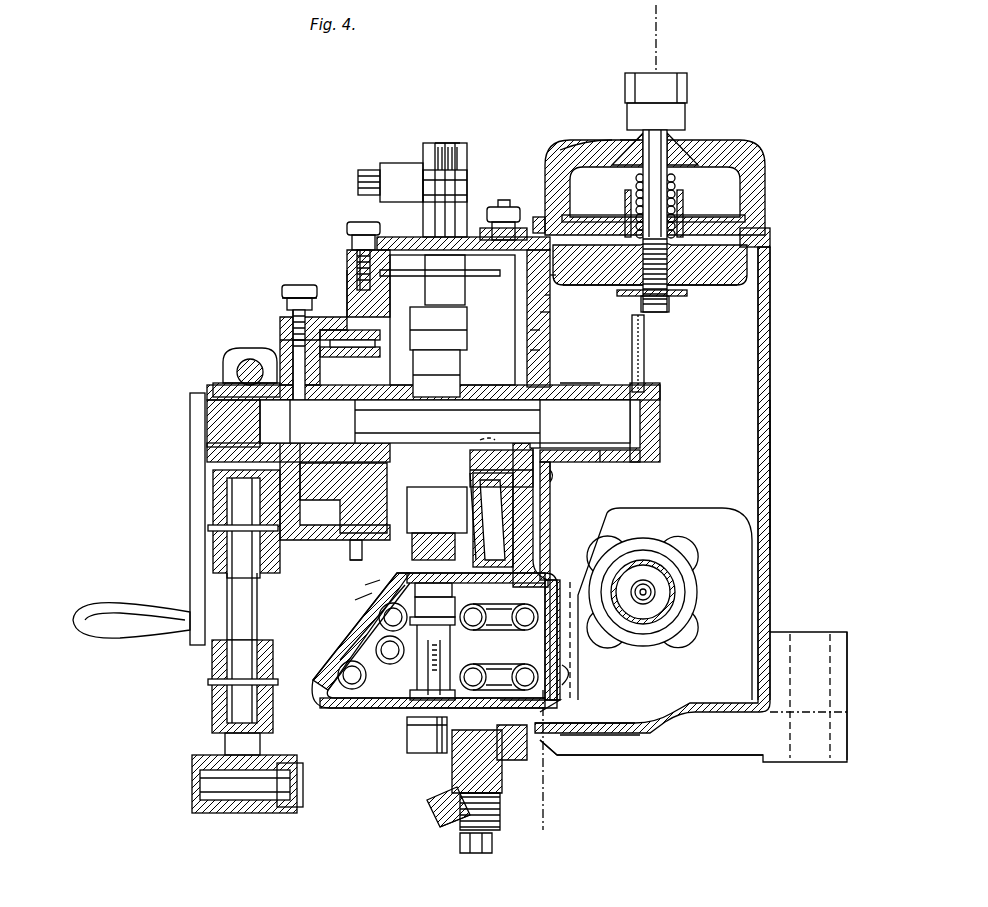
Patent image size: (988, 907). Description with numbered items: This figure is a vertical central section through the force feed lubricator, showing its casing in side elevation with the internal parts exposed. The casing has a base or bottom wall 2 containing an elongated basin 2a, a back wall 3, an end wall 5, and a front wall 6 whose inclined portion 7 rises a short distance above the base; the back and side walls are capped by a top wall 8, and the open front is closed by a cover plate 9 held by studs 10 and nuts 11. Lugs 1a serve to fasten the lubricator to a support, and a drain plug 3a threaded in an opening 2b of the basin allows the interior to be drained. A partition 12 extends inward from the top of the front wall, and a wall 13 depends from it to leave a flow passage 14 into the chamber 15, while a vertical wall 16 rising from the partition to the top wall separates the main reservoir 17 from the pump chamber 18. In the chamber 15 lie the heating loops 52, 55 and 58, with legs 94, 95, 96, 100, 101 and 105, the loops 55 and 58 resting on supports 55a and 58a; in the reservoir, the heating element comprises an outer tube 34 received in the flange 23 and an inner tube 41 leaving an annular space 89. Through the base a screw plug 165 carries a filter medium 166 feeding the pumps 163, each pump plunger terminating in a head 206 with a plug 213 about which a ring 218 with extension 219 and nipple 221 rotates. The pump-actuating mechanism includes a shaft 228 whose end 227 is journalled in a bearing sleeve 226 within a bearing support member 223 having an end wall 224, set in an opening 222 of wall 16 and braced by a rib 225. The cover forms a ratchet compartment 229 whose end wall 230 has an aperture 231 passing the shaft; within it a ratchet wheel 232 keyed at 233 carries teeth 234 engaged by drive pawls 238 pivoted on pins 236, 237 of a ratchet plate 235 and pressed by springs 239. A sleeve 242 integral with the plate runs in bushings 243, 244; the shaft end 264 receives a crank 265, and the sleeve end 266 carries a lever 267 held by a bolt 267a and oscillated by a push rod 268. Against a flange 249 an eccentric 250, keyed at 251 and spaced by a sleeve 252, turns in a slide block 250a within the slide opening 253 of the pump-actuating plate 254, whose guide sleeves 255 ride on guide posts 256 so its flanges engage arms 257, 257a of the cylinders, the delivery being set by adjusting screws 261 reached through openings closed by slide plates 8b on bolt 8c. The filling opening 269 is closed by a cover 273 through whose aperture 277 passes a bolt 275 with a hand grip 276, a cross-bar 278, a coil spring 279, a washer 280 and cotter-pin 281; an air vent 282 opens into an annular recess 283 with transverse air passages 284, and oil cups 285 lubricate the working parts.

The lugs 1a is at (557, 755).
The base or bottom wall 2 is at (705, 708).
The basin 2a is at (655, 728).
The opening 2b is at (460, 790).
The back wall 3 is at (772, 455).
The drain plug 3a is at (430, 805).
The side or end wall 5 is at (670, 15).
The front wall 6 is at (330, 700).
The inclined portion 7 is at (350, 640).
The top wall 8 is at (365, 232).
The slide plates 8b is at (490, 215).
The bolt 8c is at (504, 200).
The cover plate 9 is at (365, 588).
The studs 10 is at (350, 550).
The nuts 11 is at (352, 563).
The partition 12 is at (280, 325).
The wall 13 is at (562, 660).
The flow passage 14 is at (570, 712).
The space or chamber 15 is at (410, 708).
The vertical wall 16 is at (513, 522).
The main reservoir or storage chamber 17 is at (772, 335).
The pump chamber 18 is at (345, 300).
The flange or boss 23 is at (690, 580).
The outer tube 34 is at (675, 592).
The tube 41 is at (646, 603).
The heating tube 52 is at (497, 628).
The heating tube or loop 55 is at (498, 672).
The support 55a is at (560, 705).
The heating tube or loop 58 is at (376, 652).
The support 58a is at (338, 678).
The annular space 89 is at (655, 596).
The leg 94 is at (523, 606).
The leg 95 is at (476, 606).
The leg 96 is at (358, 603).
The leg 100 is at (395, 700).
The leg 101 is at (470, 666).
The leg 105 is at (572, 683).
The pumps 163 is at (436, 369).
The screw plug 165 is at (407, 738).
The filter medium 166 is at (415, 660).
The head 206 is at (425, 212).
The plug 213 is at (450, 150).
The ring 218 is at (423, 172).
The extension 219 is at (412, 175).
The hollow nipple 221 is at (370, 170).
The opening 222 is at (553, 470).
The bearing support member 223 is at (662, 458).
The end wall 224 is at (662, 440).
The reinforcing rib or plate 225 is at (700, 510).
The bearing sleeve 226 is at (612, 462).
The end of shaft 227 is at (590, 383).
The shaft 228 is at (447, 423).
The ratchet compartment or chamber 229 is at (330, 350).
The end wall 230 is at (290, 330).
The aperture 231 is at (230, 470).
The ratchet wheel 232 is at (470, 470).
The key 233 is at (395, 440).
The teeth 234 is at (436, 371).
The ratchet plate 235 is at (320, 527).
The pin 236 is at (385, 345).
The pin 237 is at (390, 508).
The drive pawl 238 is at (385, 333).
The spring member 239 is at (325, 330).
The sleeve 242 is at (285, 320).
The bearing bushing 243 is at (445, 421).
The bearing bushing 244 is at (280, 345).
The flange or abutment 249 is at (545, 430).
The eccentric or cam 250 is at (545, 398).
The eccentric slide block 250a is at (553, 480).
The key 251 is at (490, 445).
The spacer sleeve 252 is at (475, 450).
The slide opening 253 is at (540, 355).
The pump-actuating member 254 is at (540, 335).
The guide sleeve 255 is at (550, 318).
The guide posts 256 is at (555, 282).
The arm 257 is at (550, 300).
The arm 257a is at (533, 542).
The adjusting screw 261 is at (575, 243).
The decreased-diameter end 264 is at (207, 432).
The crank 265 is at (190, 540).
The end of sleeve 266 is at (213, 390).
The lever 267 is at (195, 645).
The bolt 267a is at (237, 372).
The push rod 268 is at (215, 815).
The filling opening 269 is at (772, 240).
The cover 273 is at (768, 186).
The bolt 275 is at (677, 188).
The hand grip 276 is at (688, 90).
The aperture 277 is at (690, 158).
The cross-bar 278 is at (715, 285).
The coil spring 279 is at (634, 190).
The washer 280 is at (685, 296).
The cotter-pin 281 is at (665, 306).
The air vent 282 is at (598, 142).
The annular recess 283 is at (672, 140).
The transverse air passages 284 is at (625, 140).
The grease or oil cups 285 is at (645, 357).